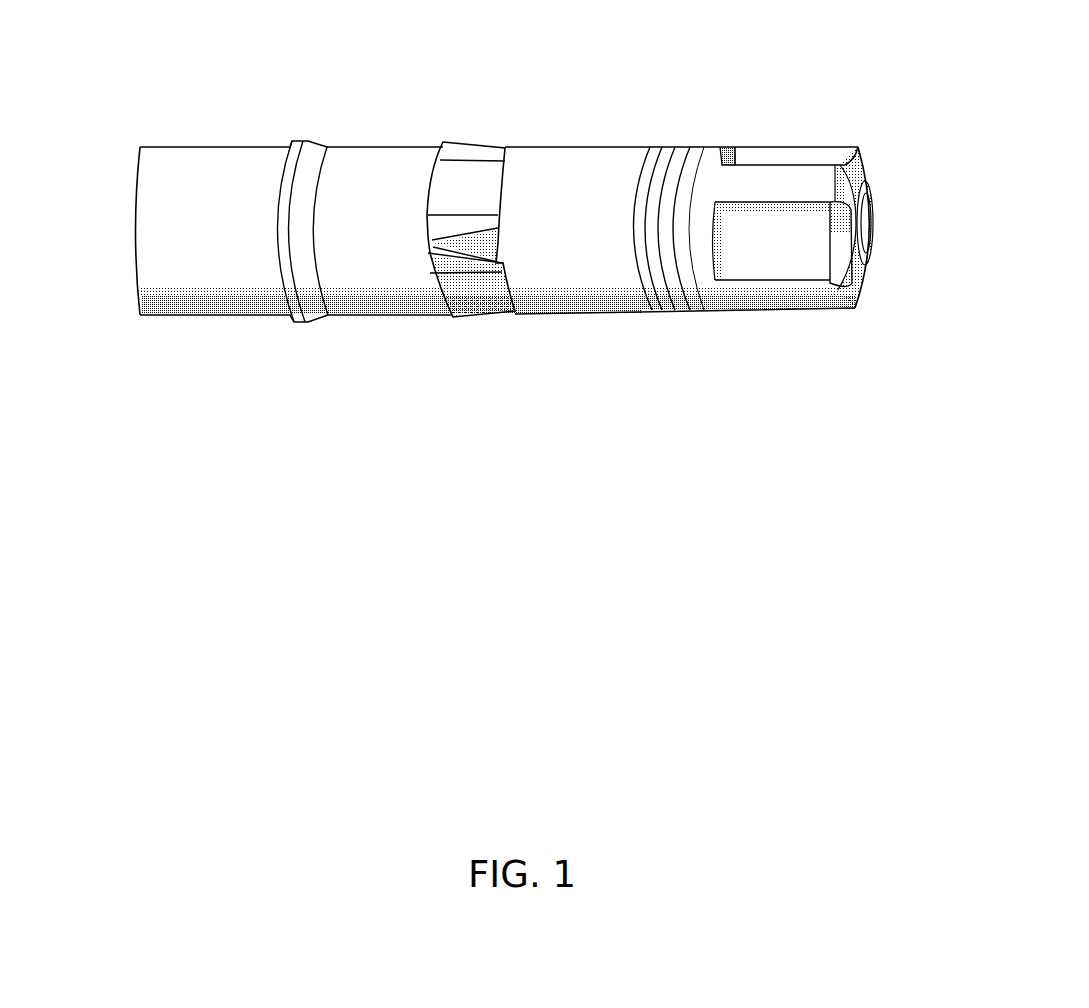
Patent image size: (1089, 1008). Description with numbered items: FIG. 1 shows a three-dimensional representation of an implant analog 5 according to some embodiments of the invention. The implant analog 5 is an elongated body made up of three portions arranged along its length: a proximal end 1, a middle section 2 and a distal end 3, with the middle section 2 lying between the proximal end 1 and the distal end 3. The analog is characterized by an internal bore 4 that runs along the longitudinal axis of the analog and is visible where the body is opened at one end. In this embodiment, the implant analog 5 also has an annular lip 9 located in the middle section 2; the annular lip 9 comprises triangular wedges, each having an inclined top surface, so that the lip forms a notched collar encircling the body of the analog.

The proximal end 1 is at (892, 355).
The middle section 2 is at (485, 311).
The distal end 3 is at (372, 367).
The internal bore 4 is at (902, 213).
The implant analog 5 is at (893, 120).
The annular lip 9 is at (475, 135).